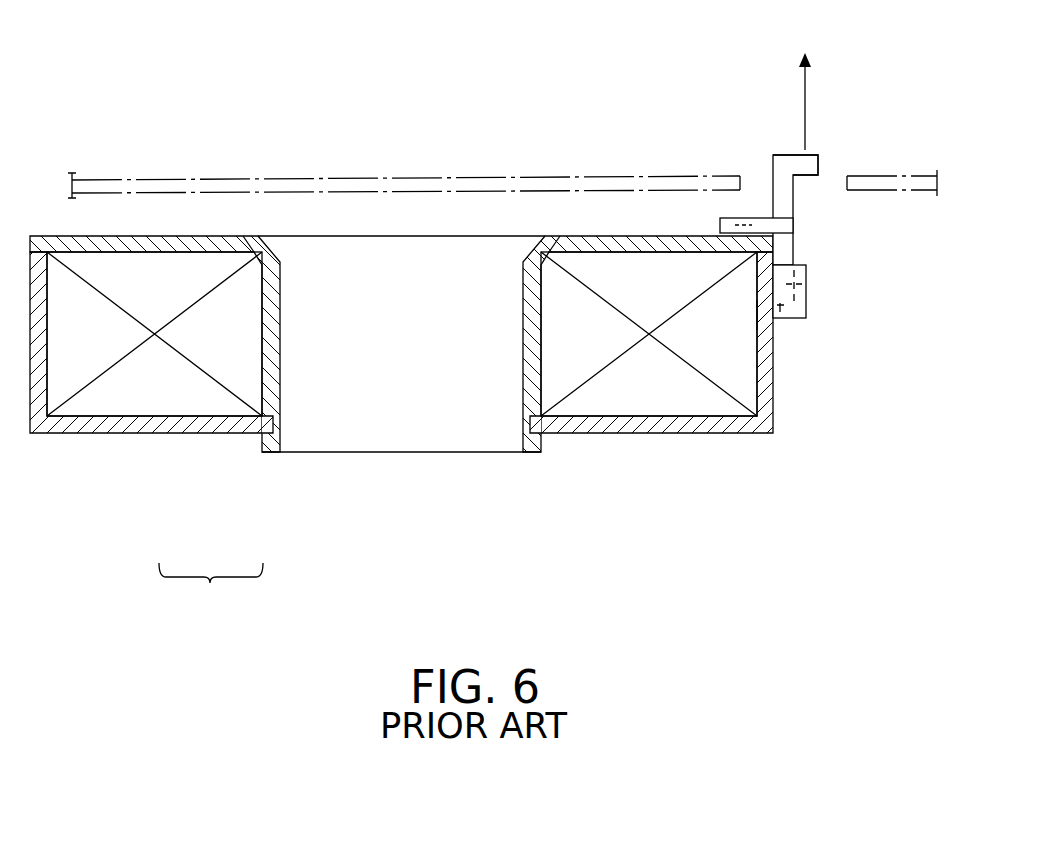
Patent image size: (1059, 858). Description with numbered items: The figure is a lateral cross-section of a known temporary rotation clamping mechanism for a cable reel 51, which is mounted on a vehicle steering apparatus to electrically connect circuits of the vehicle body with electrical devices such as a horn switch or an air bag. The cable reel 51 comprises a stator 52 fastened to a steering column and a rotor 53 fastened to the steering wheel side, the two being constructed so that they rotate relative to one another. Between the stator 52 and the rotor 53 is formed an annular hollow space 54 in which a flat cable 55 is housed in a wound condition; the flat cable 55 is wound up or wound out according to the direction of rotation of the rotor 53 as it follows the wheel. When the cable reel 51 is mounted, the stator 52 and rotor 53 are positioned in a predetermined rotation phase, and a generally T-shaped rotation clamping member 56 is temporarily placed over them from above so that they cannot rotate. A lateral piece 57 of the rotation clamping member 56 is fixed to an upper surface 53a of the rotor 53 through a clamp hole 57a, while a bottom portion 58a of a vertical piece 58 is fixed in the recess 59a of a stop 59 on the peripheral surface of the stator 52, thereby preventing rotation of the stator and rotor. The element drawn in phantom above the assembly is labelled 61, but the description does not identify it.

The cable reel 51 is at (211, 593).
The stator 52 is at (145, 436).
The rotor 53 is at (300, 455).
The upper surface 53a is at (730, 255).
The annular hollow space 54 is at (185, 278).
The flat cable 55 is at (107, 297).
The rotation clamping member 56 is at (776, 116).
The lateral piece 57 is at (760, 217).
The clamp hole 57a is at (740, 228).
The vertical piece 58 is at (783, 200).
The bottom portion 58a is at (808, 285).
The stop 59 is at (818, 311).
The recess 59a is at (785, 318).
The printed circuit board 61 is at (440, 165).